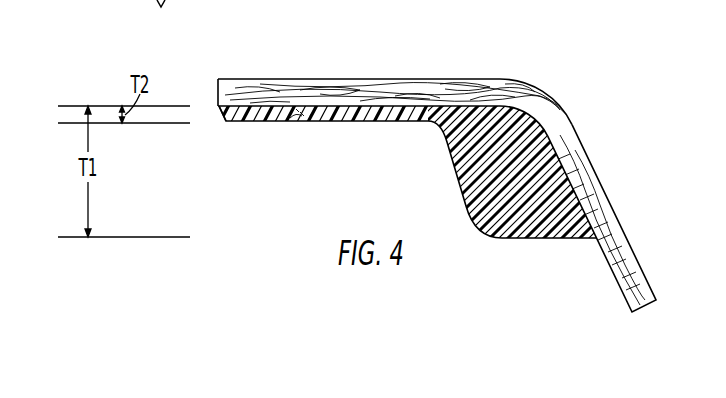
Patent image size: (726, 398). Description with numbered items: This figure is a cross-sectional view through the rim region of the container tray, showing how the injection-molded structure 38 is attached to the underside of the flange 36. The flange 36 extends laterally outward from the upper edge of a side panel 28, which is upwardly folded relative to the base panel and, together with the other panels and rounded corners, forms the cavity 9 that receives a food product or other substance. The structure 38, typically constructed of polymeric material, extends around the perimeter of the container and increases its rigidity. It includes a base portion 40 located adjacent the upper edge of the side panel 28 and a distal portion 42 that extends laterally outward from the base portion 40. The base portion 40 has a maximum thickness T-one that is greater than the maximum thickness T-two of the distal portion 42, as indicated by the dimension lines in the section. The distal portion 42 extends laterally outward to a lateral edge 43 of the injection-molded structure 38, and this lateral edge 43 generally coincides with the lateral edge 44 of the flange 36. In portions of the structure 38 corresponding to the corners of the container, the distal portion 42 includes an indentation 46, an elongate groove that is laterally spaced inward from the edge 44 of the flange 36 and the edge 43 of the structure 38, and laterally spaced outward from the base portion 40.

The cavity 9 is at (657, 177).
The side panel 28 is at (615, 214).
The flange 36 is at (397, 72).
The injection-molded structure 38 is at (516, 224).
The base portion 40 is at (537, 146).
The distal portion 42 is at (261, 118).
The lateral edge 43 is at (224, 110).
The lateral edge 44 is at (218, 88).
The indentation 46 is at (293, 117).